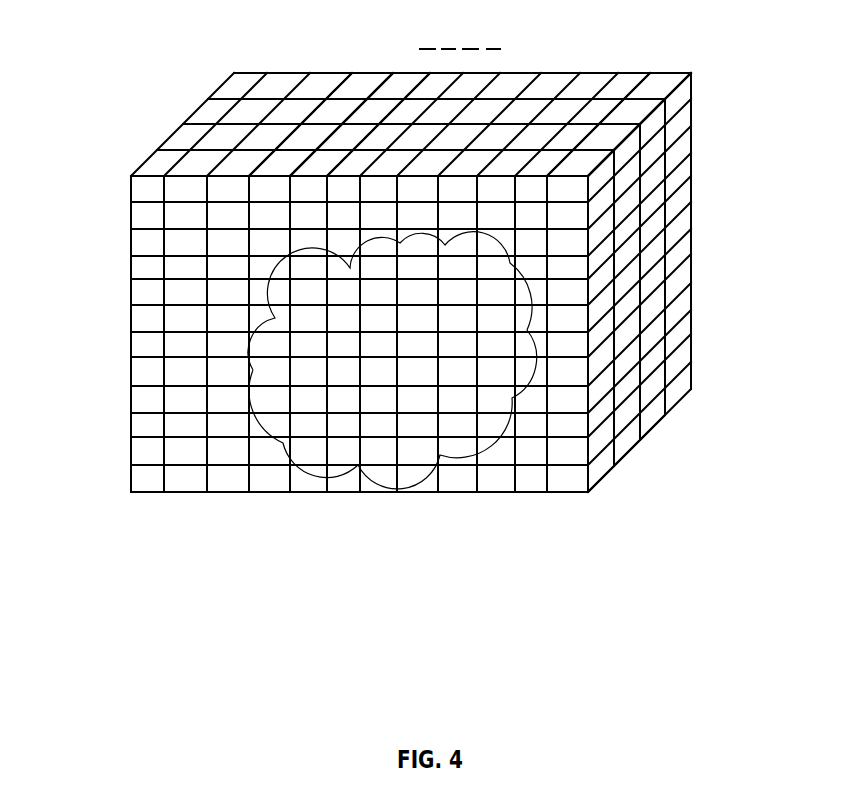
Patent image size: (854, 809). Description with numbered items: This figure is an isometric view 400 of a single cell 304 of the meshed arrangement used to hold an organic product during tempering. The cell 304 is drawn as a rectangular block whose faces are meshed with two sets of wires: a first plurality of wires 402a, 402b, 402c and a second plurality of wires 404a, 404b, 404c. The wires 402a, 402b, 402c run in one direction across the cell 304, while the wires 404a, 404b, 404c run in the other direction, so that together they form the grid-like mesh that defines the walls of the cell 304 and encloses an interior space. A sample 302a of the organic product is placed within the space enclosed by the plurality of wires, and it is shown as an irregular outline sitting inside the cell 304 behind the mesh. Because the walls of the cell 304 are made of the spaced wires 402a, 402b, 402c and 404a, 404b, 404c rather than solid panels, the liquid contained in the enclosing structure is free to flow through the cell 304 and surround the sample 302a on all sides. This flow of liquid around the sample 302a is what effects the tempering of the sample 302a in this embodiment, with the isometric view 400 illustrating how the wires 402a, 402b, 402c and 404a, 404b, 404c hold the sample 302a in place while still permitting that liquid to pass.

The isometric view 400 is at (397, 319).
The cell 304 is at (130, 256).
The sample 302a is at (262, 353).
The wire 402a is at (265, 83).
The wire 402b is at (307, 84).
The wire 402c is at (640, 88).
The wire 404a is at (617, 448).
The wire 404b is at (640, 423).
The wire 404c is at (667, 400).